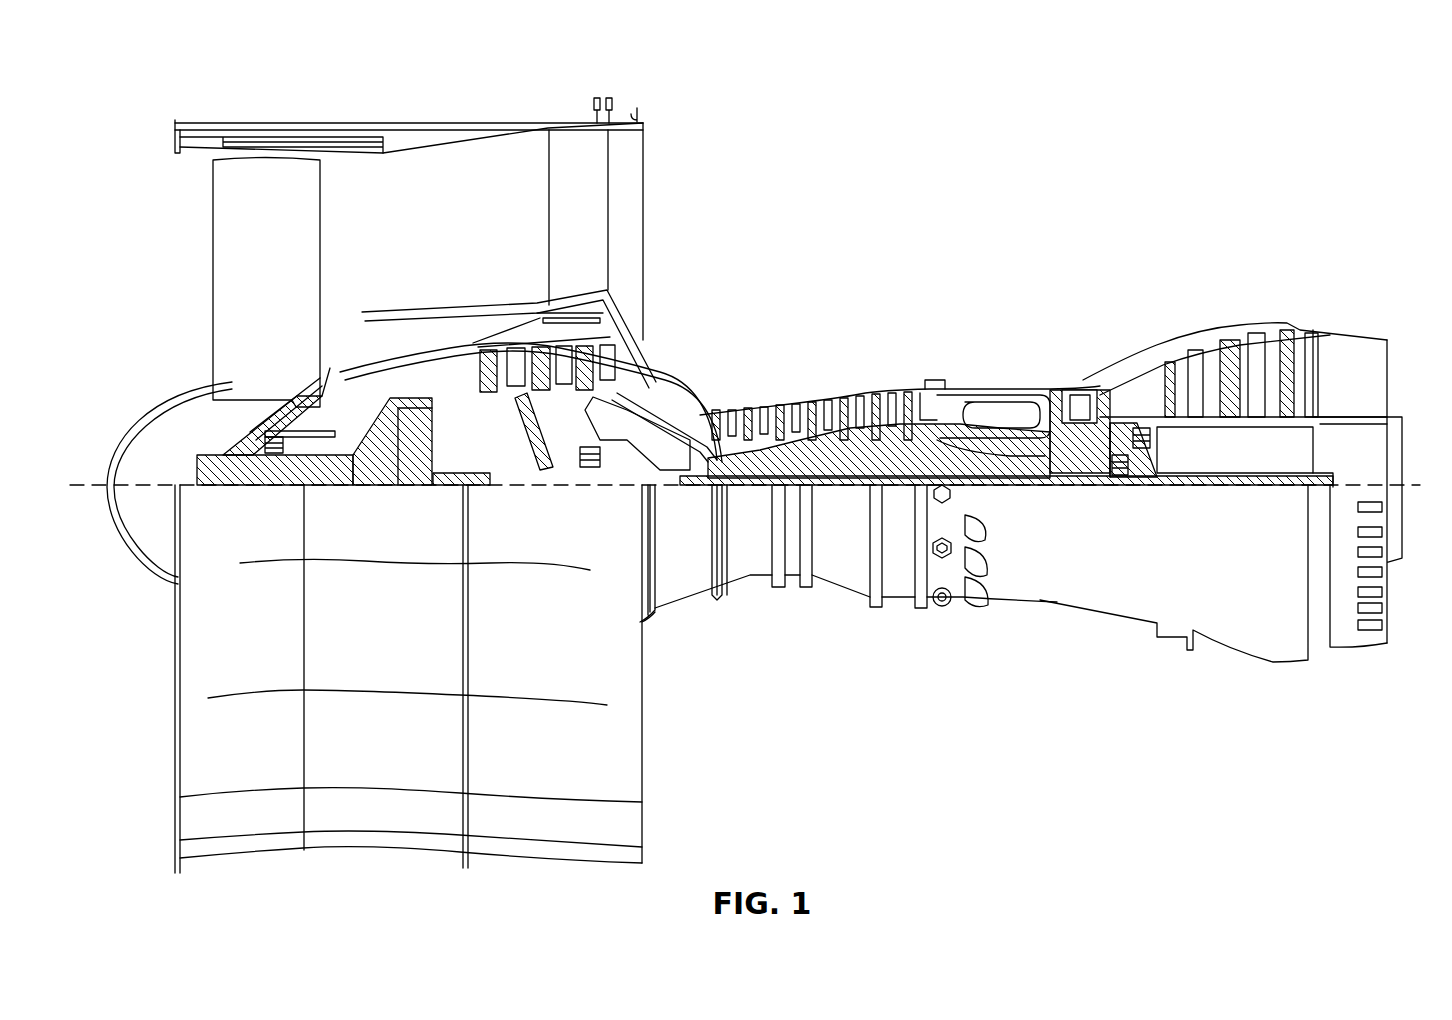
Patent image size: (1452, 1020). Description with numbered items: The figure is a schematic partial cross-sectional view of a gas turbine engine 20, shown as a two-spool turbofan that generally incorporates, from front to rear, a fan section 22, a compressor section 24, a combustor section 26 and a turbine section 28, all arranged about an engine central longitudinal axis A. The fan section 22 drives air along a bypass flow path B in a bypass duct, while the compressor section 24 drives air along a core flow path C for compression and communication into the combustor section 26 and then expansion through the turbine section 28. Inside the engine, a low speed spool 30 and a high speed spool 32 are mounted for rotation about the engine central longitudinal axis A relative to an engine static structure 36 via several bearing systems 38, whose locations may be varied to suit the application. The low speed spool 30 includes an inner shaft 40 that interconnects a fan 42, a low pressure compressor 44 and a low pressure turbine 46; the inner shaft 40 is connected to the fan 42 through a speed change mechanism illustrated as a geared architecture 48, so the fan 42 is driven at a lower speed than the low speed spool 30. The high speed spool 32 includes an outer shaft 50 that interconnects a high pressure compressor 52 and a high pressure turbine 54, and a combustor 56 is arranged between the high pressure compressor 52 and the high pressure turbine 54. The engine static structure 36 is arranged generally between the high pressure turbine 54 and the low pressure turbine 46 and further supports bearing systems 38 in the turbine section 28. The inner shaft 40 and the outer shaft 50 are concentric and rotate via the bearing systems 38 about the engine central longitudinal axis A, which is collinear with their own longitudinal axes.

The gas turbine engine 20 is at (1334, 86).
The fan section 22 is at (440, 122).
The compressor section 24 is at (962, 235).
The combustor section 26 is at (1045, 235).
The turbine section 28 is at (1330, 236).
The low speed spool 30 is at (852, 494).
The high speed spool 32 is at (866, 430).
The engine static structure 36 is at (898, 606).
The bearing systems 38 is at (275, 455).
The inner shaft 40 is at (672, 484).
The fan 42 is at (452, 324).
The low pressure compressor 44 is at (563, 352).
The low pressure turbine 46 is at (1243, 352).
The geared architecture 48 is at (412, 470).
The outer shaft 50 is at (1075, 470).
The high pressure compressor 52 is at (820, 445).
The high pressure turbine 54 is at (1080, 395).
The combustor 56 is at (1002, 410).
The engine central longitudinal axis A is at (1417, 485).
The bypass flow path B is at (490, 260).
The core flow path C is at (383, 347).